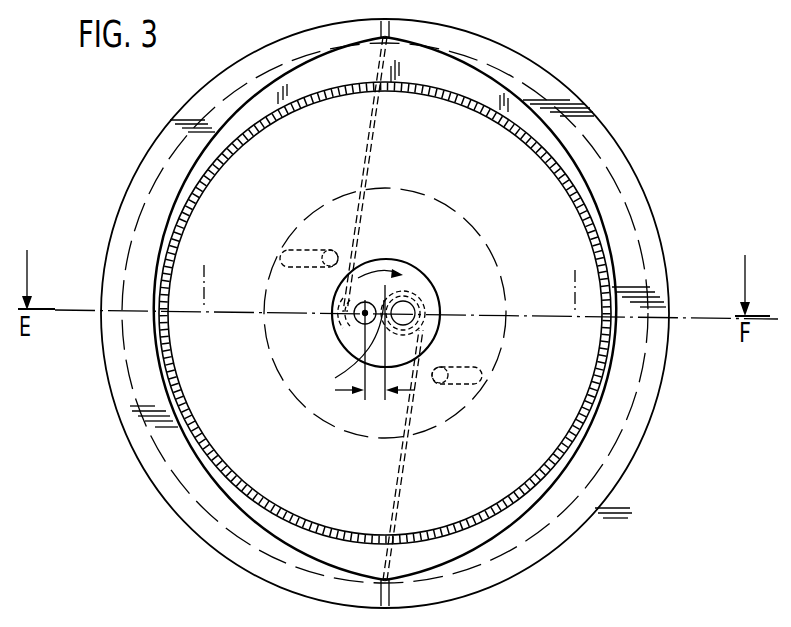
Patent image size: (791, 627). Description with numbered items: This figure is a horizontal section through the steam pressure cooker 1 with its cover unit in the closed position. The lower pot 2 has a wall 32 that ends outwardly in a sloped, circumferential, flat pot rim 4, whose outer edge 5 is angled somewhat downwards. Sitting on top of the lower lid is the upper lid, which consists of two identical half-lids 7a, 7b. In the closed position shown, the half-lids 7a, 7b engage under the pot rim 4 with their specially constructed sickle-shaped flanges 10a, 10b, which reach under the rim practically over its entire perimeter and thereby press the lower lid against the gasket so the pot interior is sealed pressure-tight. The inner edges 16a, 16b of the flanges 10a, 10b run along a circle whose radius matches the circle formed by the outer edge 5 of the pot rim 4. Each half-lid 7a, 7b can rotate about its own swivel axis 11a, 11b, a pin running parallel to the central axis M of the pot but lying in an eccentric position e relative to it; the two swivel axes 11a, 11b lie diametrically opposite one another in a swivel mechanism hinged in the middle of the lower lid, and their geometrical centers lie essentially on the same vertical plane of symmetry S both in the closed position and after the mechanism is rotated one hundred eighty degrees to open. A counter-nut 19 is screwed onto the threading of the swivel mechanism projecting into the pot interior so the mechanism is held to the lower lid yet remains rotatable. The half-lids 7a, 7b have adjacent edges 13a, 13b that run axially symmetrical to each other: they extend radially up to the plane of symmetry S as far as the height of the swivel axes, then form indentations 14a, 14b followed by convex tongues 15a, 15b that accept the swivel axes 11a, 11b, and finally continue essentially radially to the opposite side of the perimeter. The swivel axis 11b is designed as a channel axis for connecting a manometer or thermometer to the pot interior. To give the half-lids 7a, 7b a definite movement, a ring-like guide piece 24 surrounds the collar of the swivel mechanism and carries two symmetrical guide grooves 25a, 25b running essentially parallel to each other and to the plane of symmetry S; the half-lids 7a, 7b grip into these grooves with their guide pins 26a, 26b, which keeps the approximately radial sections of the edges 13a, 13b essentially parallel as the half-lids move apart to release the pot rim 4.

The steam pressure cooker 1 is at (676, 406).
The lower pot 2 is at (478, 120).
The pot rim 4 is at (636, 247).
The outer edge 5 is at (631, 193).
The half-lid 7a is at (166, 473).
The half-lid 7b is at (604, 486).
The sickle-shaped flange 10a is at (148, 183).
The sickle-shaped flange 10b is at (607, 150).
The swivel axis 11a is at (400, 318).
The swivel axis 11b is at (406, 310).
The edge 13a is at (372, 153).
The edge 13b is at (359, 215).
The indentation 14a is at (353, 323).
The indentation 14b is at (425, 303).
The convex tongue 15a is at (428, 322).
The convex tongue 15b is at (347, 308).
The inner edge 16a is at (253, 97).
The inner edge 16b is at (560, 152).
The counter-nut 19 is at (441, 316).
The guide piece 24 is at (477, 230).
The guide groove 25a is at (300, 251).
The guide groove 25b is at (483, 379).
The guide pin 26a is at (330, 250).
The guide pin 26b is at (465, 388).
The wall 32 is at (515, 117).
The plane of symmetry S is at (388, 274).
The central axis M is at (355, 318).
The eccentric position e is at (375, 389).